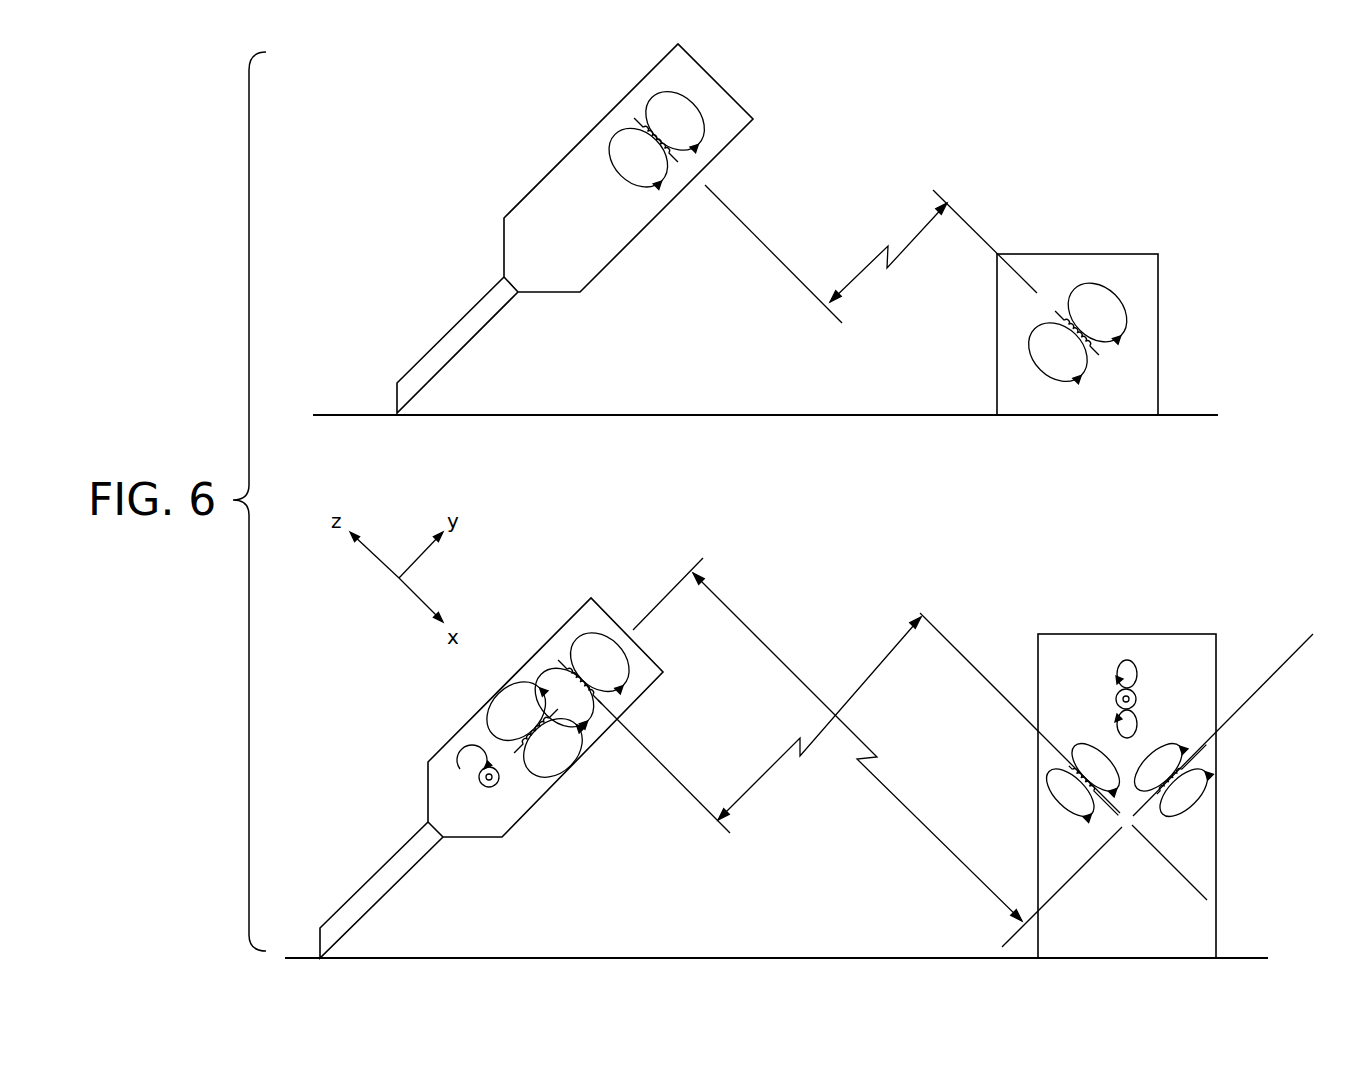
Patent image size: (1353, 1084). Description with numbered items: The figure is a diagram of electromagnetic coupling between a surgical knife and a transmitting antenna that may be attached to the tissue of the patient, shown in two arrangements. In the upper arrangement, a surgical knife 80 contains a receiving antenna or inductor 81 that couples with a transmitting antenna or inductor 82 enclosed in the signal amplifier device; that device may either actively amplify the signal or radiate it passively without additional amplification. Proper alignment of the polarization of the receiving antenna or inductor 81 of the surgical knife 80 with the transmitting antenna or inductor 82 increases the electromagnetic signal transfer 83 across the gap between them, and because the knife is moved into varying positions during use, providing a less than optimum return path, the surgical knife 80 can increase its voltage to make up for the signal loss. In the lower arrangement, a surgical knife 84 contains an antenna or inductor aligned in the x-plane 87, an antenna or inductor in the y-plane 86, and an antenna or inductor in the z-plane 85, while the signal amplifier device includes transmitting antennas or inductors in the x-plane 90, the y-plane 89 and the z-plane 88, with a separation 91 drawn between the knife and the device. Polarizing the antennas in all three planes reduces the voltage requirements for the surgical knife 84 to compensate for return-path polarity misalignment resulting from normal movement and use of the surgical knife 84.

The surgical knife 80 is at (497, 248).
The antenna 81 is at (635, 117).
The transmitting antenna or inductor 82 is at (1108, 352).
The electromagnetic signal transfer 83 is at (898, 257).
The surgical knife 84 is at (418, 793).
The antenna or inductor in the z-plane 85 is at (492, 787).
The antenna or inductor in the y-plane 86 is at (518, 752).
The antenna or inductor in the x-plane 87 is at (600, 697).
The transmitting antenna or inductor in the z-plane 88 is at (1137, 699).
The transmitting antenna or inductor in the y-plane 89 is at (1190, 760).
The transmitting antenna or inductor in the x-plane 90 is at (1065, 765).
The distance 91 is at (767, 771).